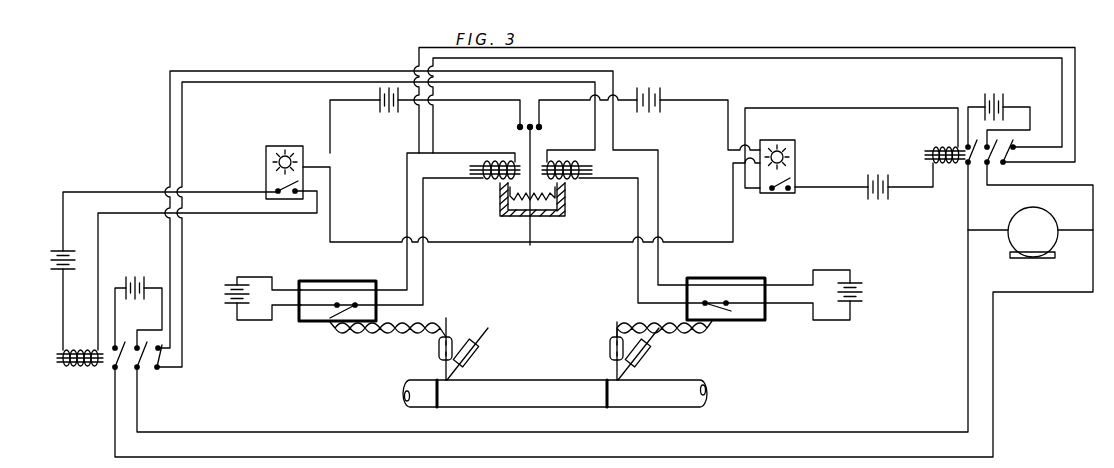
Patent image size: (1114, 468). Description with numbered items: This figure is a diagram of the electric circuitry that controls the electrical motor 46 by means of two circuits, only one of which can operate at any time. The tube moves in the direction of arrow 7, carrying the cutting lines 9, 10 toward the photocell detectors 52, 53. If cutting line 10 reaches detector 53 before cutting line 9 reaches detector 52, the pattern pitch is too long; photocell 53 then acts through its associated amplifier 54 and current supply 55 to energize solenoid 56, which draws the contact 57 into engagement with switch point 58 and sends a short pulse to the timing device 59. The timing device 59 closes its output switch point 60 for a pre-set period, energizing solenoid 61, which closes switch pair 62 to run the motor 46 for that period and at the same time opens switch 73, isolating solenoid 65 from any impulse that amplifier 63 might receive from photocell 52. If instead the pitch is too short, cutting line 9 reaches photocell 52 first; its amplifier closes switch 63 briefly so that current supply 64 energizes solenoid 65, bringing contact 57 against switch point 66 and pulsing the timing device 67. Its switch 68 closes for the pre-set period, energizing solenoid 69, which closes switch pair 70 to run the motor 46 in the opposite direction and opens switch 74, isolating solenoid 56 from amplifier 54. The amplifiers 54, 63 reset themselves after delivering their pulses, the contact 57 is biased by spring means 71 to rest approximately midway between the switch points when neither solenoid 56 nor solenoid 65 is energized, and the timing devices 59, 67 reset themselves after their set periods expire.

The arrow 7 is at (718, 393).
The cutting line 9 is at (433, 398).
The cutting line 10 is at (613, 393).
The electrical motor 46 is at (1024, 241).
The photocell detector 52 is at (478, 355).
The photocell detector 53 is at (649, 355).
The amplifier 54 is at (755, 315).
The current supply 55 is at (865, 290).
The solenoid 56 is at (580, 167).
The contact 57 is at (532, 142).
The switch point 58 is at (542, 127).
The timing device 59 is at (778, 140).
The output switch point 60 is at (773, 191).
The solenoid 61 is at (932, 148).
The switch pair 62 is at (977, 163).
The amplifier 63 is at (318, 318).
The current supply 64 is at (218, 298).
The solenoid 65 is at (480, 168).
The switch point 66 is at (518, 127).
The timing device 67 is at (285, 145).
The switch 68 is at (279, 194).
The solenoid 69 is at (85, 370).
The switch pair 70 is at (132, 362).
The spring means 71 is at (513, 211).
The switch 73 is at (1012, 153).
The switch 74 is at (162, 357).